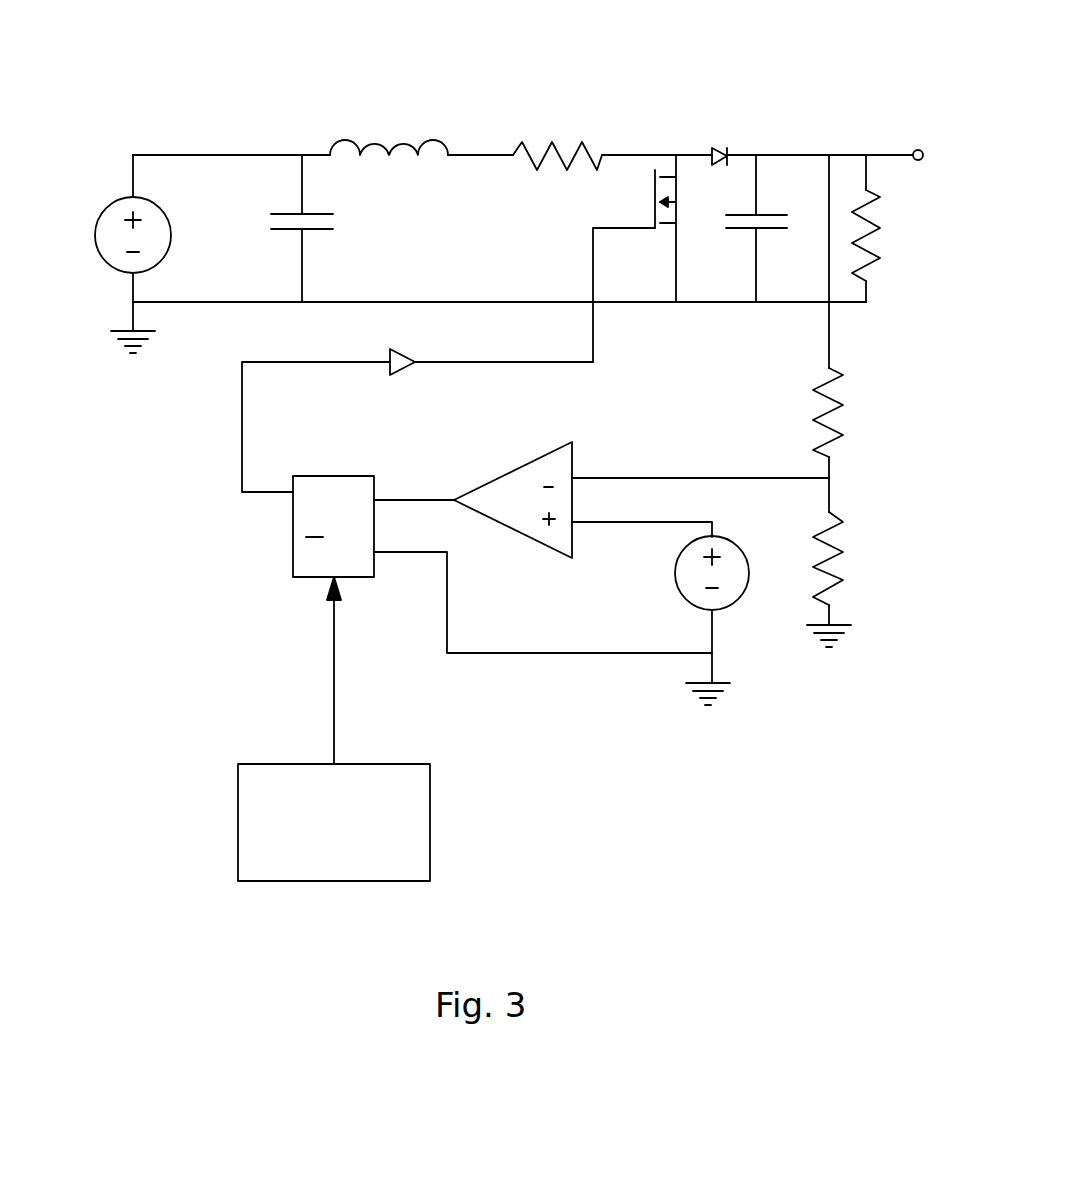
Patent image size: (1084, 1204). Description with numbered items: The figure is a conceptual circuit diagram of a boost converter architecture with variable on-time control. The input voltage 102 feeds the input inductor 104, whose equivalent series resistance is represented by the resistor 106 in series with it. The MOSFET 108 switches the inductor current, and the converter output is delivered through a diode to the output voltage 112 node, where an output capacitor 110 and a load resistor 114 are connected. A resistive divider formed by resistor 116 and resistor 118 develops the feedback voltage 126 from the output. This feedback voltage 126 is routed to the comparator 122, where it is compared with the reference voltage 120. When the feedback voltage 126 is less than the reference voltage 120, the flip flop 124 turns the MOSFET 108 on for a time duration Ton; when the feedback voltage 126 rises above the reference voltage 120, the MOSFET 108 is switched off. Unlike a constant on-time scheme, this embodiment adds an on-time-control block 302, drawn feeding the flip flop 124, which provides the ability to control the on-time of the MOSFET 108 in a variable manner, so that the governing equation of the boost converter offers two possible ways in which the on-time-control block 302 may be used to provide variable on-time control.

The input voltage 102 is at (97, 215).
The input inductor 104 is at (378, 140).
The resistor 106 is at (543, 147).
The MOSFET 108 is at (655, 180).
The output capacitor 110 is at (780, 213).
The output voltage 112 is at (917, 148).
The load resistor 114 is at (873, 252).
The resistor 116 is at (820, 393).
The resistor 118 is at (842, 545).
The reference voltage 120 is at (678, 592).
The comparator 122 is at (510, 470).
The flip flop 124 is at (332, 476).
The feedback voltage 126 is at (328, 229).
The on-time-control block 302 is at (263, 764).